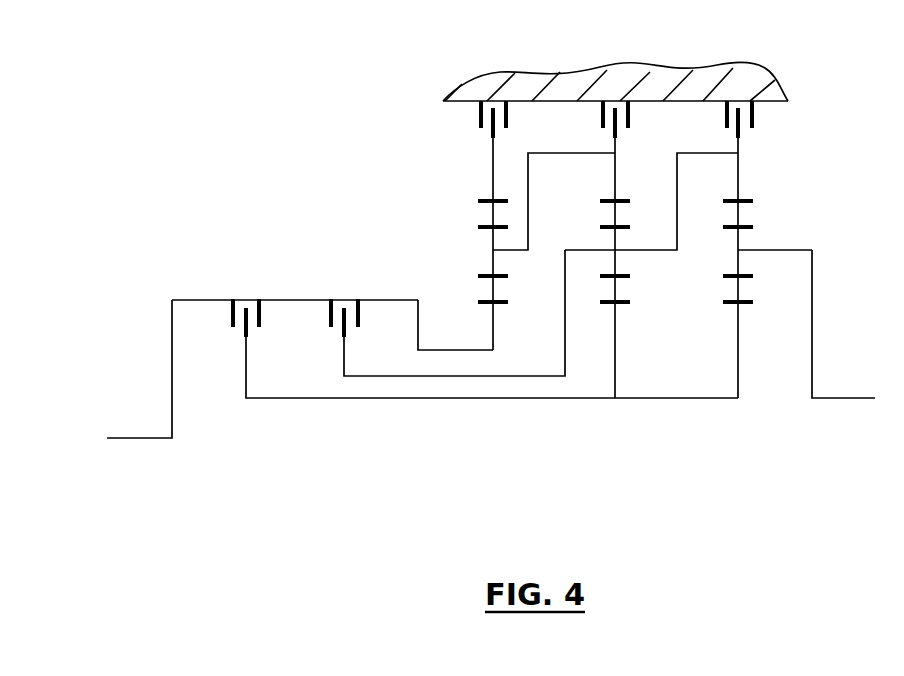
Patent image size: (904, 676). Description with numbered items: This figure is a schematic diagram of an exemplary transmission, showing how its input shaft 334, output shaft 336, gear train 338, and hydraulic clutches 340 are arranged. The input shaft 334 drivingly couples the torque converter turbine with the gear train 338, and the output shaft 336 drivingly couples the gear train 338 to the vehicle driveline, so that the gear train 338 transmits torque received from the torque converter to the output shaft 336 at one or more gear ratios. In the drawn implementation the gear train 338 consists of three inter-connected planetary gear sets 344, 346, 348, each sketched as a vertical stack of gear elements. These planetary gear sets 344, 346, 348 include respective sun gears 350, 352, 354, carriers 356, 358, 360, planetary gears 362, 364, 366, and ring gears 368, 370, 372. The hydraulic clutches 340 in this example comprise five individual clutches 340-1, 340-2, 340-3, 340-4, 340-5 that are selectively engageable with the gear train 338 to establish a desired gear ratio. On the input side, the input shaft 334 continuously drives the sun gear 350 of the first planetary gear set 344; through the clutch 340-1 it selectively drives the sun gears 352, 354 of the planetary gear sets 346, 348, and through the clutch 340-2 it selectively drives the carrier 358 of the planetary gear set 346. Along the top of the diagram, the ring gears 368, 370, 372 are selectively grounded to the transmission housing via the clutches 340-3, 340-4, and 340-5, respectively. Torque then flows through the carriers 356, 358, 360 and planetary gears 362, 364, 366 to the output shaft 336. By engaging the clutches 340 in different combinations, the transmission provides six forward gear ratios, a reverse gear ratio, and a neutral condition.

The input shaft 334 is at (118, 438).
The output shaft 336 is at (860, 398).
The gear train 338 is at (222, 80).
The hydraulic clutches 340 is at (277, 181).
The clutch 340-1 is at (232, 310).
The clutch 340-2 is at (330, 310).
The clutch 340-3 is at (481, 113).
The clutch 340-4 is at (603, 115).
The clutch 340-5 is at (727, 115).
The planetary gear set 344 is at (438, 198).
The planetary gear set 346 is at (662, 325).
The planetary gear set 348 is at (808, 185).
The sun gear 350 is at (486, 301).
The sun gear 352 is at (620, 305).
The sun gear 354 is at (745, 305).
The carrier 356 is at (525, 252).
The carrier 358 is at (660, 250).
The carrier 360 is at (778, 252).
The planetary gears 362 is at (488, 257).
The planetary gears 364 is at (613, 240).
The planetary gears 366 is at (740, 240).
The ring gear 368 is at (486, 198).
The ring gear 370 is at (613, 200).
The ring gear 372 is at (744, 200).